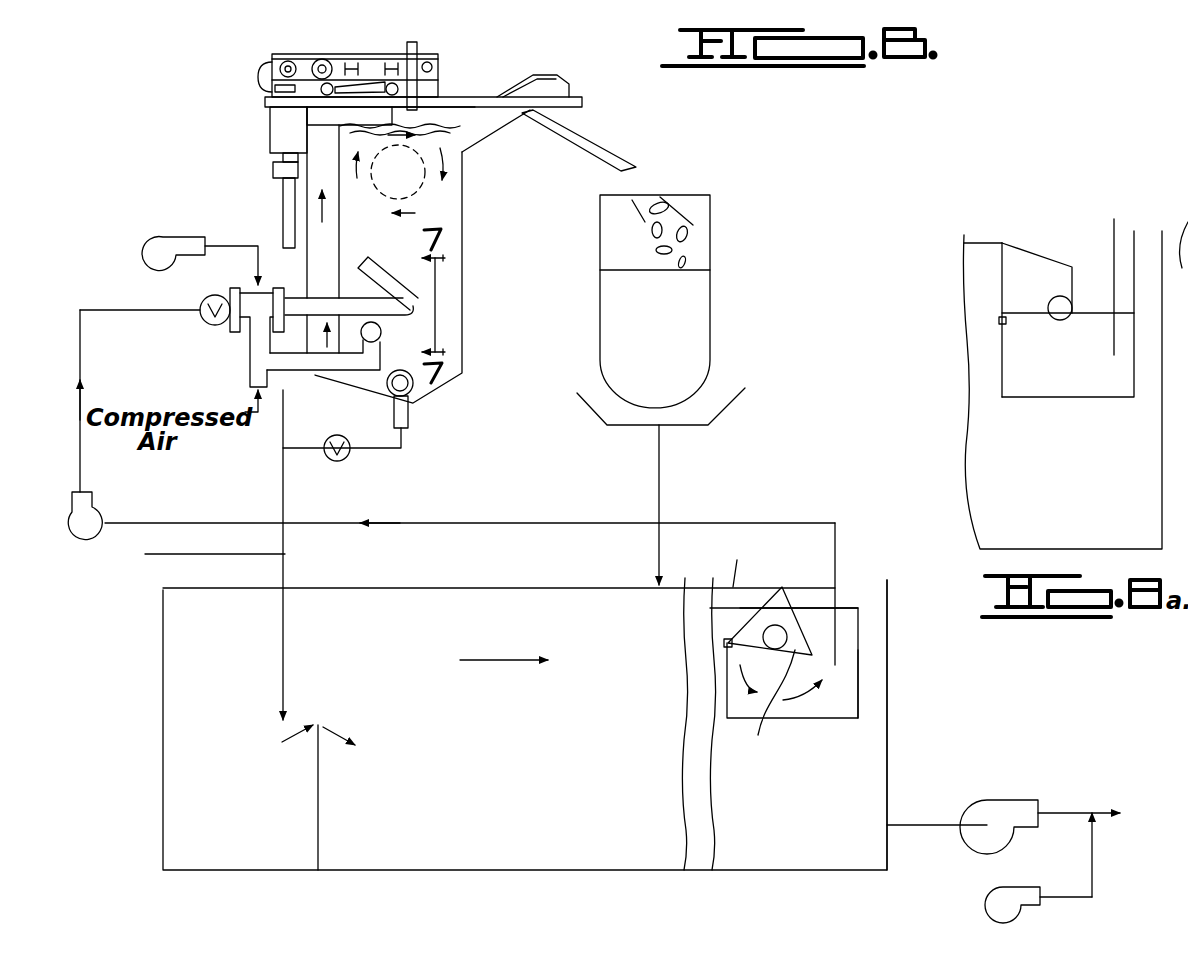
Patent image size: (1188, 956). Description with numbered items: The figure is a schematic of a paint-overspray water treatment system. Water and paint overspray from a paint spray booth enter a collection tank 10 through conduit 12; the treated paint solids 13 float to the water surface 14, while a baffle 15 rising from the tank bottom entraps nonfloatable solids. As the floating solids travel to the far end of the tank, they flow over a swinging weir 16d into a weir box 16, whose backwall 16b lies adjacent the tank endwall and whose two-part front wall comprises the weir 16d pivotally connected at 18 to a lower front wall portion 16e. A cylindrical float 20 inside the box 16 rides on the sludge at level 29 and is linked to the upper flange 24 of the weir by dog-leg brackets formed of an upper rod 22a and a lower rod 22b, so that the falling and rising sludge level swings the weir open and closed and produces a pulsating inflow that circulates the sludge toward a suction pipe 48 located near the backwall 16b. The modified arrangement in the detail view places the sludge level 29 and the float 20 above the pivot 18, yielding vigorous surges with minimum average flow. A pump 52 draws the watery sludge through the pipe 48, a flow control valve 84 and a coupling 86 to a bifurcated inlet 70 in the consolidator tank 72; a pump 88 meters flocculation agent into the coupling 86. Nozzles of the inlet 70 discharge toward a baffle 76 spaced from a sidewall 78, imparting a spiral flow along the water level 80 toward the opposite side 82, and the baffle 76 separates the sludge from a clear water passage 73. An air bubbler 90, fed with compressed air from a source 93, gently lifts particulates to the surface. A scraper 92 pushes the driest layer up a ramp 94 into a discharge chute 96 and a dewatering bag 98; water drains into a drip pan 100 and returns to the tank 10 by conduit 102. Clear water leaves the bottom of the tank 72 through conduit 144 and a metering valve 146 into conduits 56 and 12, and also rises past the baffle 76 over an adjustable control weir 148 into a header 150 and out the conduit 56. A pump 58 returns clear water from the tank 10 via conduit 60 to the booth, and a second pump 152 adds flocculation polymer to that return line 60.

In FIG. 6, the collection tank 10 is at (575, 872).
In FIG. 6, the conduit 12 is at (171, 550).
In FIG. 6, the paint solids 13 is at (737, 560).
In FIG. 6A, the water surface 14 is at (976, 243).
In FIG. 6, the baffle 15 is at (320, 788).
In FIG. 6, the weir box 16 is at (715, 690).
In FIG. 6A, the weir box 16 is at (1134, 381).
In FIG. 6, the backwall 16b is at (860, 678).
In FIG. 6, the swinging weir 16d is at (760, 608).
In FIG. 6A, the swinging weir 16d is at (1002, 272).
In FIG. 6, the lower front wall portion 16e is at (727, 710).
In FIG. 6, the pivot 18 is at (724, 645).
In FIG. 6A, the pivot 18 is at (999, 320).
In FIG. 6, the cylindrical float 20 is at (763, 637).
In FIG. 6A, the cylindrical float 20 is at (1055, 320).
In FIG. 6, the upper rod 22a is at (792, 602).
In FIG. 6, the lower rod 22b is at (758, 735).
In FIG. 6, the upper flange of the weir 24 is at (782, 587).
In FIG. 6, the sludge level 29 is at (845, 608).
In FIG. 6A, the sludge level 29 is at (1091, 306).
In FIG. 6, the suction pipe 48 is at (548, 520).
In FIG. 6A, the suction pipe 48 is at (1114, 242).
In FIG. 6, the pump 52 is at (84, 543).
In FIG. 6, the discharge conduit 56 is at (283, 477).
In FIG. 6, the pump 58 is at (965, 805).
In FIG. 6, the return line 60 is at (1028, 798).
In FIG. 6, the bifurcated inlet 70 is at (435, 302).
In FIG. 6, the consolidator tank 72 is at (447, 255).
In FIG. 6, the clear water passage 73 is at (320, 183).
In FIG. 6, the baffle 76 is at (340, 232).
In FIG. 6, the sidewall 78 is at (283, 232).
In FIG. 6, the water level 80 is at (300, 118).
In FIG. 6, the opposite side 82 is at (462, 190).
In FIG. 6, the flow control valve 84 is at (205, 318).
In FIG. 6, the coupling 86 is at (257, 292).
In FIG. 6, the pump 88 is at (158, 255).
In FIG. 6, the air bubbler 90 is at (382, 330).
In FIG. 6, the source of compressed air 93 is at (300, 380).
In FIG. 6, the scraper 92 is at (437, 97).
In FIG. 6, the ramp 94 is at (492, 128).
In FIG. 6, the discharge chute 96 is at (600, 140).
In FIG. 6, the dewatering bag 98 is at (710, 300).
In FIG. 6, the drip pan 100 is at (730, 413).
In FIG. 6, the conduit 102 is at (660, 470).
In FIG. 6, the conduit 144 is at (403, 440).
In FIG. 6, the metering valve 146 is at (338, 462).
In FIG. 6, the control weir 148 is at (399, 174).
In FIG. 6, the header 150 is at (270, 133).
In FIG. 6, the second pump 152 is at (985, 905).